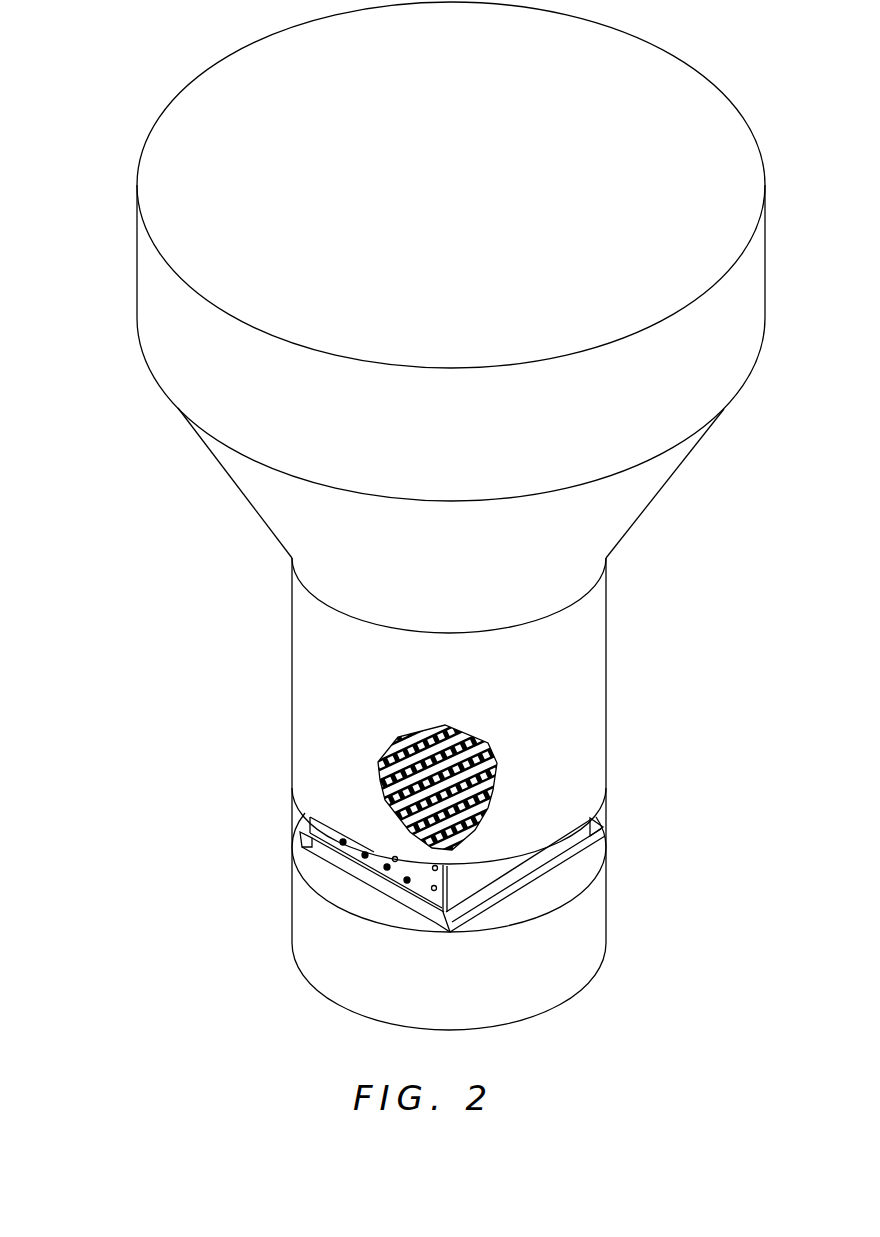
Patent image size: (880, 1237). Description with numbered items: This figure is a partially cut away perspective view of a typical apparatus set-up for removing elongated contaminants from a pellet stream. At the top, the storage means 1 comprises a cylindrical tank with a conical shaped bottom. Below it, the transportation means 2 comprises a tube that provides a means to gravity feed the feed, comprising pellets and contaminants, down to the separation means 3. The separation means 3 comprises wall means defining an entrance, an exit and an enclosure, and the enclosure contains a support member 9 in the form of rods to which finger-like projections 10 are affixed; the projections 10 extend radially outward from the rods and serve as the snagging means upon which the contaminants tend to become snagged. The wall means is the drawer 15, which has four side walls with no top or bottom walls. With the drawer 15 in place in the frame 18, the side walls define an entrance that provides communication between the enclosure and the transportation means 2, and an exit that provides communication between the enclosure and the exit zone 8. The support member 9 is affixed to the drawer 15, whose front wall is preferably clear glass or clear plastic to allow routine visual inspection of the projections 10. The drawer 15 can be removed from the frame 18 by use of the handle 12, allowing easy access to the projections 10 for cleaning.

The storage means 1 is at (118, 306).
The transportation means 2 is at (243, 727).
The separation means 3 is at (230, 831).
The exit zone 8 is at (231, 923).
The support member 9 is at (461, 737).
The projections 10 is at (405, 753).
The handle 12 is at (380, 876).
The drawer 15 is at (423, 887).
The frame 18 is at (485, 882).